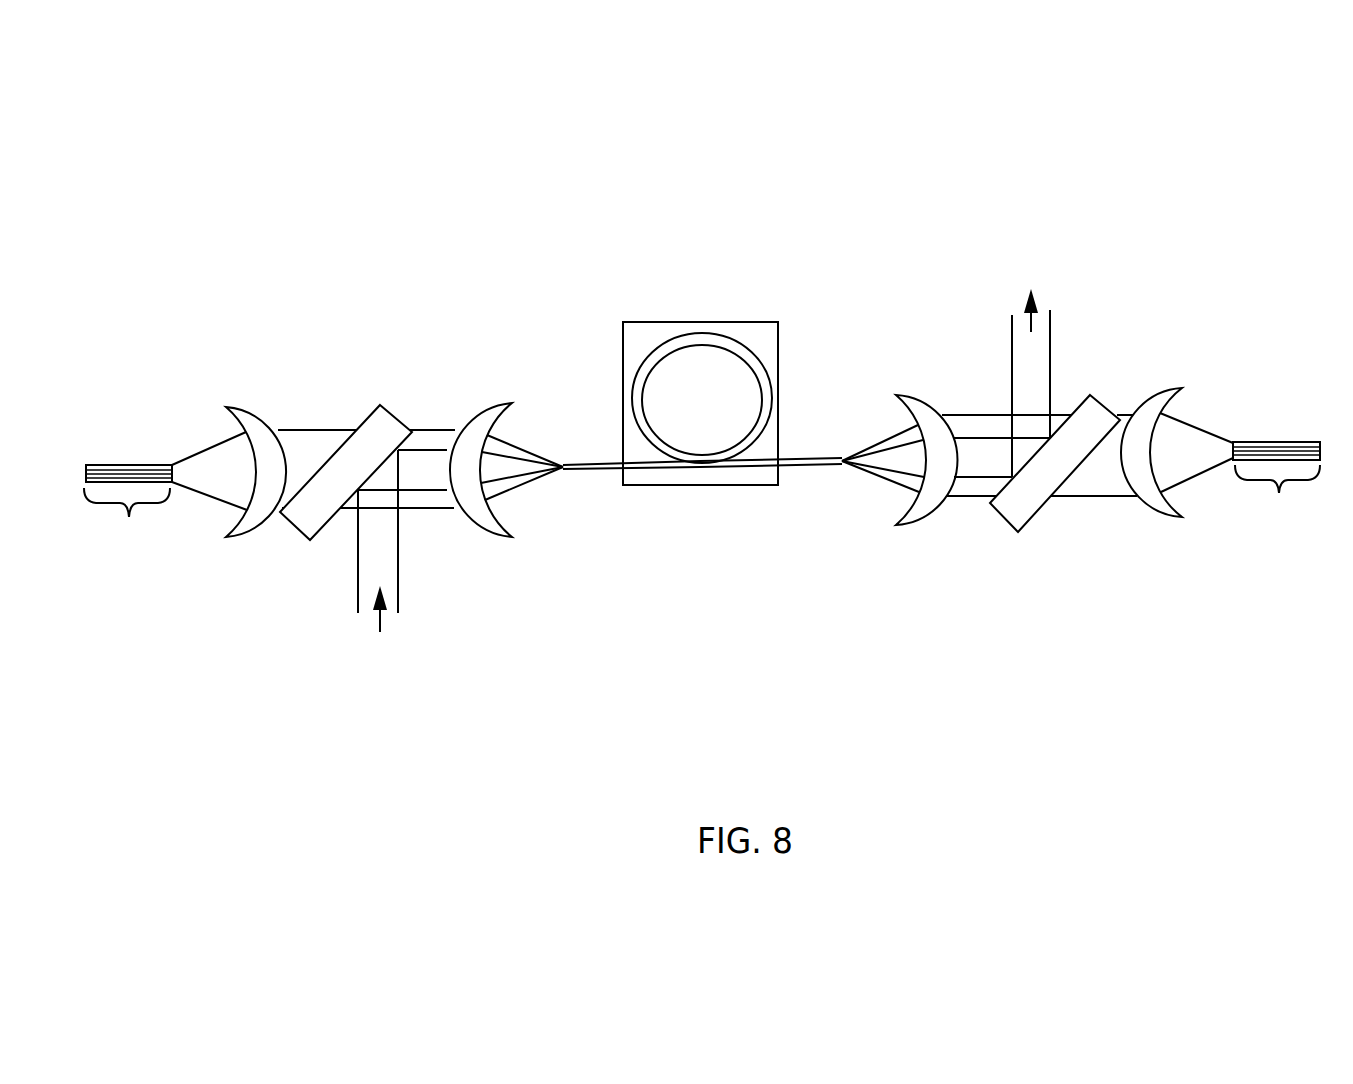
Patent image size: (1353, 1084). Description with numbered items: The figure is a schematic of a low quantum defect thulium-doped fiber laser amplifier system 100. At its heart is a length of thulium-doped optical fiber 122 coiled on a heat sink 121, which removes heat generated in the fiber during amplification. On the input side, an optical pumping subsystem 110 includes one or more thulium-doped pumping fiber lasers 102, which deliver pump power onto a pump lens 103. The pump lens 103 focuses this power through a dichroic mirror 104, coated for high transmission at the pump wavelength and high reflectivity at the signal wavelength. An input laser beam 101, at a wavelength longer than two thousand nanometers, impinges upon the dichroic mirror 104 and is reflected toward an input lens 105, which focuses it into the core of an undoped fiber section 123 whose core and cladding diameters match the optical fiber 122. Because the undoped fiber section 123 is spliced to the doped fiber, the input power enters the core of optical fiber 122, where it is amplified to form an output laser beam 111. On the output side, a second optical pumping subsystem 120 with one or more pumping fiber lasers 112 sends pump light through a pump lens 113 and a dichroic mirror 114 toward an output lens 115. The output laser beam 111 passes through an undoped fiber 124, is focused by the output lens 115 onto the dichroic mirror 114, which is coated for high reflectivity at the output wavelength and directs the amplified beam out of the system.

The low quantum defect thulium-doped fiber laser amplifier system 100 is at (827, 162).
The input laser beam 101 is at (380, 556).
The pumping fiber lasers 102 is at (128, 463).
The pump lens 103 is at (240, 536).
The dichroic mirror 104 is at (396, 416).
The input lens 105 is at (480, 413).
The optical pumping subsystem 110 is at (127, 520).
The output laser beam 111 is at (1029, 368).
The pumping fiber lasers 112 is at (1274, 440).
The pump lens 113 is at (1157, 518).
The dichroic mirror 114 is at (1003, 521).
The output lens 115 is at (920, 397).
The optical pumping subsystem 120 is at (1277, 497).
The heat sink 121 is at (722, 320).
The thulium-doped optical fiber 122 is at (667, 357).
The undoped fiber section 123 is at (590, 474).
The undoped fiber 124 is at (808, 472).